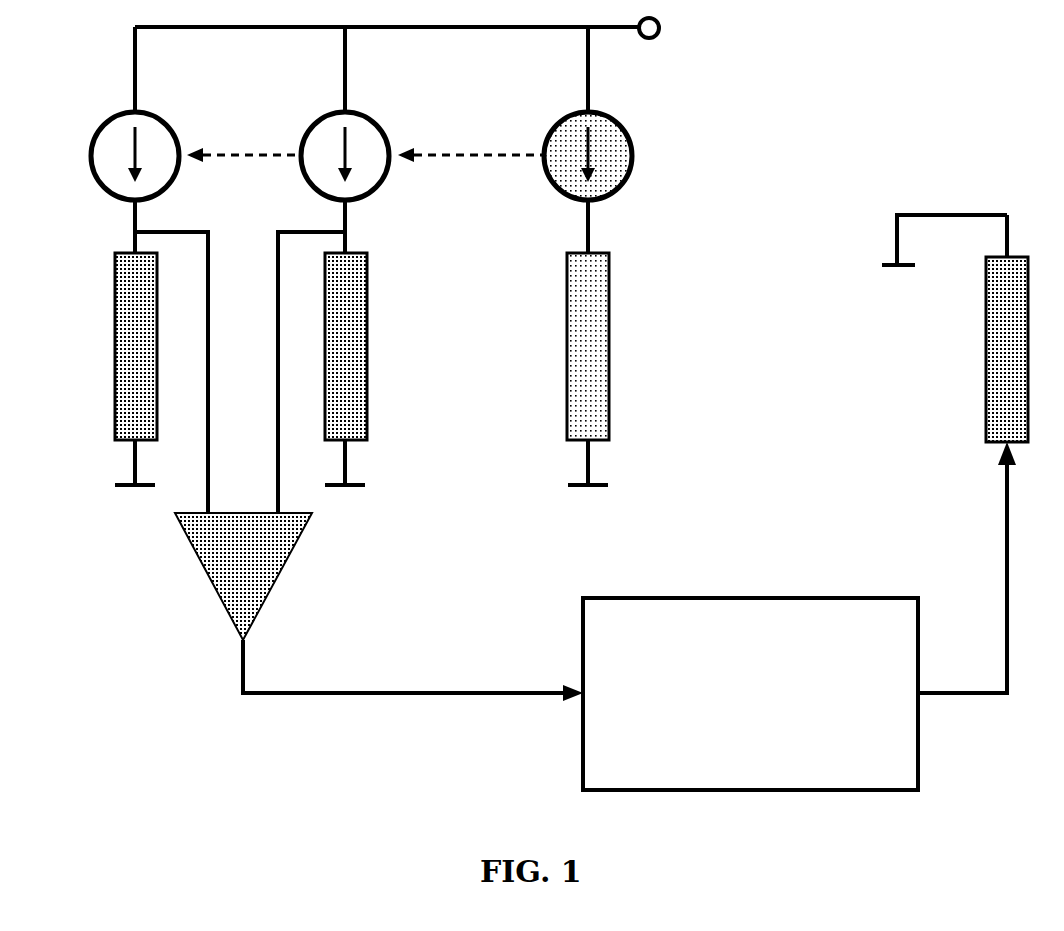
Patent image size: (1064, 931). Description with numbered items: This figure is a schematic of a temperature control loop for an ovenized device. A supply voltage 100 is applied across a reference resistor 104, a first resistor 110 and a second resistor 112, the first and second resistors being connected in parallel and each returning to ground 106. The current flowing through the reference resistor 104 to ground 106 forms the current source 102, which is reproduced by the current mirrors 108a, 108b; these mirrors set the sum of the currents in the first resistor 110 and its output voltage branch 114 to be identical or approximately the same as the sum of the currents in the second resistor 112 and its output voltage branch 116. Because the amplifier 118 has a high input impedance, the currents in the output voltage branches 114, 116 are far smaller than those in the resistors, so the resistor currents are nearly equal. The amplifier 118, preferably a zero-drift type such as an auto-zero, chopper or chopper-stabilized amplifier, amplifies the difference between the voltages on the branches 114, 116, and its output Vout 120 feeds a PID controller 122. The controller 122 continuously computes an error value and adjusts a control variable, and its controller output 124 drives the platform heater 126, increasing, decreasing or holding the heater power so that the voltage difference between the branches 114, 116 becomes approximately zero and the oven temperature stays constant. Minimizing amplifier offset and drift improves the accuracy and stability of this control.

The supply voltage 100 is at (660, 28).
The current source 102 is at (632, 160).
The reference resistor 104 is at (609, 337).
The ground 106 is at (120, 485).
The current mirror 108a is at (160, 110).
The current mirror 108b is at (373, 114).
The first resistor 110 is at (115, 289).
The second resistor 112 is at (368, 283).
The output voltage branch 114 is at (208, 453).
The output voltage branch 116 is at (278, 463).
The amplifier 118 is at (288, 558).
The Vout 120 is at (243, 663).
The PID controller 122 is at (745, 598).
The controller output 124 is at (1003, 560).
The platform heater 126 is at (985, 378).